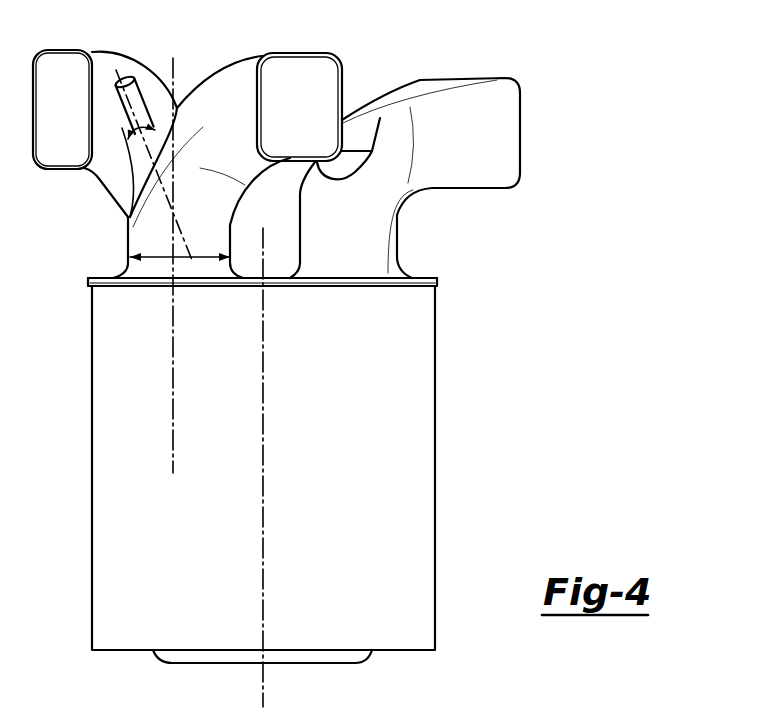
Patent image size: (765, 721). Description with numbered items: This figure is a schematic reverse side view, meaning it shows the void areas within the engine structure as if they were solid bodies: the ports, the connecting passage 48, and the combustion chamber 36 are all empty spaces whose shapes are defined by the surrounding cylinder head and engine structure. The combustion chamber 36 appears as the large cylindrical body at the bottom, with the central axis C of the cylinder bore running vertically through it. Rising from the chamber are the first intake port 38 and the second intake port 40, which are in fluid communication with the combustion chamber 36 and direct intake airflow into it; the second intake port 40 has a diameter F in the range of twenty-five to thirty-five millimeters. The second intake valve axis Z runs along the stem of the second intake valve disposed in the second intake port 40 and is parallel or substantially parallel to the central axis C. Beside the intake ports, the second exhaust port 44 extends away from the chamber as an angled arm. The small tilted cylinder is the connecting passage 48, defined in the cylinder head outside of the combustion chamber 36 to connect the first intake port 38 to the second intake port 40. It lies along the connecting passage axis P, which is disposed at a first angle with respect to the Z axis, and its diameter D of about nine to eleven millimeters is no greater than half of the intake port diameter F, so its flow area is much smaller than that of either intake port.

The combustion chamber 36 is at (393, 427).
The first intake port 38 is at (101, 62).
The second intake port 40 is at (152, 238).
The second exhaust port 44 is at (360, 238).
The connecting passage 48 is at (137, 97).
The connecting passage axis P is at (133, 116).
The connecting passage diameter D is at (122, 128).
The second intake port diameter F is at (194, 258).
The second intake valve axis Z is at (173, 280).
The central axis of the cylinder bore C is at (263, 474).